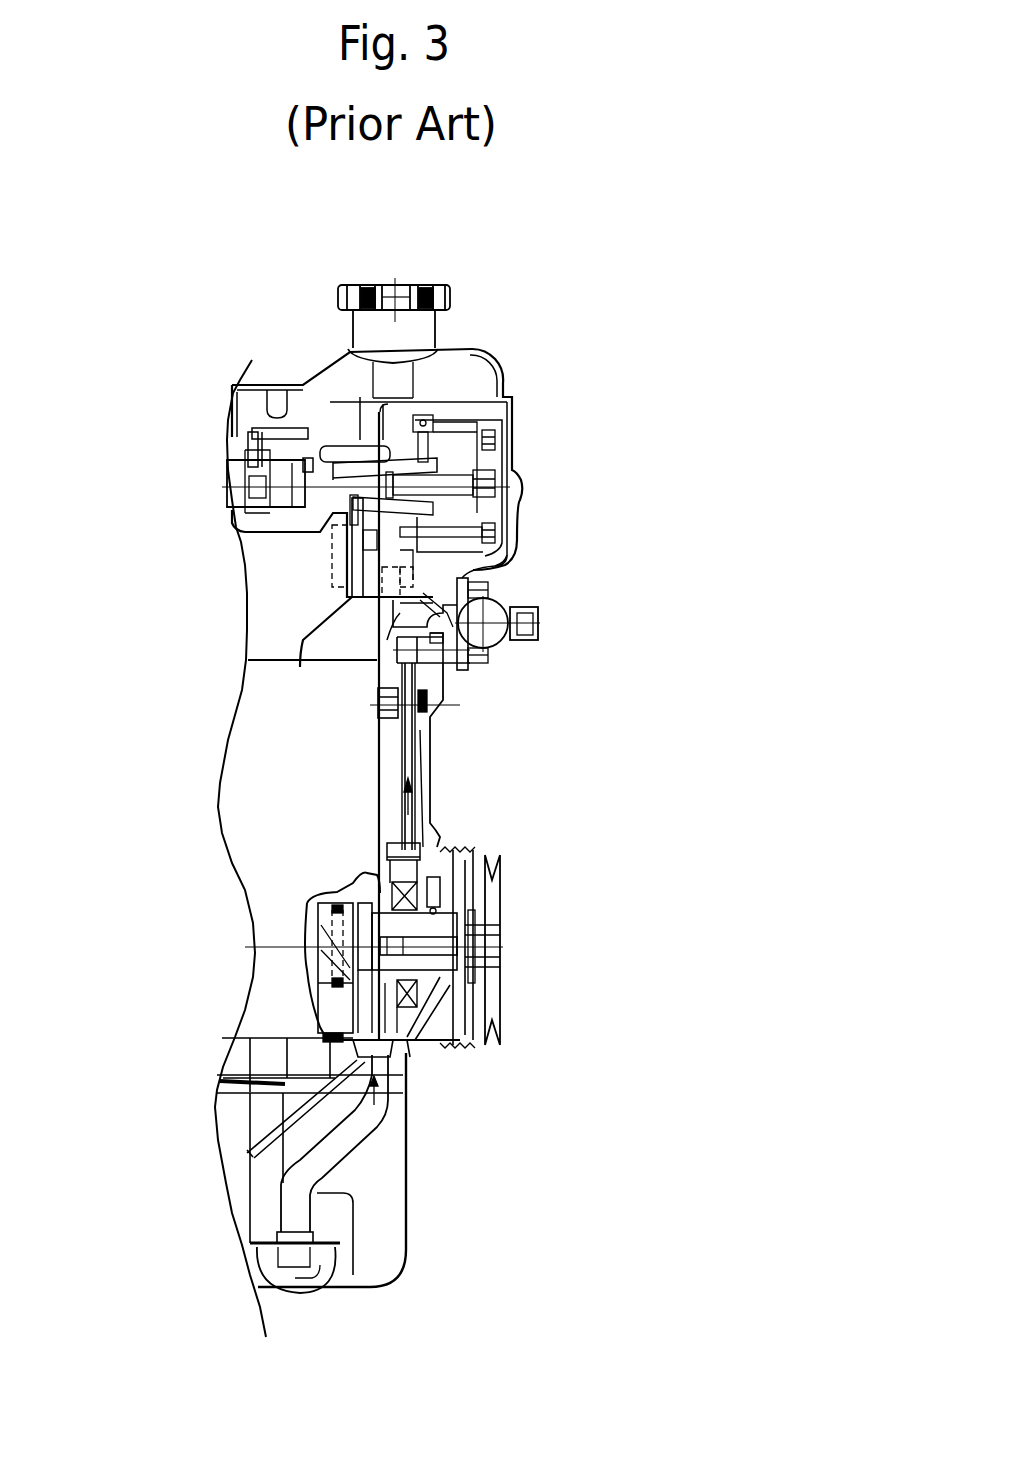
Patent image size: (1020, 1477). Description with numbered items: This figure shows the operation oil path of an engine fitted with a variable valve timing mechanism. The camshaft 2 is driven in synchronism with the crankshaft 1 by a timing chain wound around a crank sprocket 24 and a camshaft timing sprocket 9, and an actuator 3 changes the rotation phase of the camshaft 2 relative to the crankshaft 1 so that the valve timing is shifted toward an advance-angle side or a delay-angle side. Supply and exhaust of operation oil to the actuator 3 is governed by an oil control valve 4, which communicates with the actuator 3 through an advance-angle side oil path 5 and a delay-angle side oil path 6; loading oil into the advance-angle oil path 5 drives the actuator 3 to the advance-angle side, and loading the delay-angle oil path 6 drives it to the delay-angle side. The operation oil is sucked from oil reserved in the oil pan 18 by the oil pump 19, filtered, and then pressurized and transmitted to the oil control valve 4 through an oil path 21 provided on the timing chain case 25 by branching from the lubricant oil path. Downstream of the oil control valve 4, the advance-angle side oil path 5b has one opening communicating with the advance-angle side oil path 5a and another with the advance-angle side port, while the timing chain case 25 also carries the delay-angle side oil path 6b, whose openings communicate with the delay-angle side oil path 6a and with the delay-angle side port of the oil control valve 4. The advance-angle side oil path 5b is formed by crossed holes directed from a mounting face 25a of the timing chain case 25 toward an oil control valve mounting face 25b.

The crankshaft 1 is at (411, 1055).
The camshaft 2 is at (230, 473).
The actuator 3 is at (483, 470).
The oil control valve 4 is at (512, 601).
The advance-angle side oil path 5 is at (333, 540).
The advance-angle side oil path 5a is at (353, 590).
The advance-angle side oil path 5b is at (312, 684).
The delay-angle side oil path 6 is at (330, 573).
The delay-angle side oil path 6a is at (343, 593).
The delay-angle side oil path 6b is at (330, 542).
The camshaft timing sprocket 9 is at (403, 412).
The oil pan 18 is at (408, 1175).
The oil pump 19 is at (463, 1033).
The oil path 21 is at (412, 747).
The crank sprocket 24 is at (357, 883).
The timing chain case 25 is at (525, 539).
The mounting face 25a is at (376, 668).
The oil control valve mounting face 25b is at (458, 668).